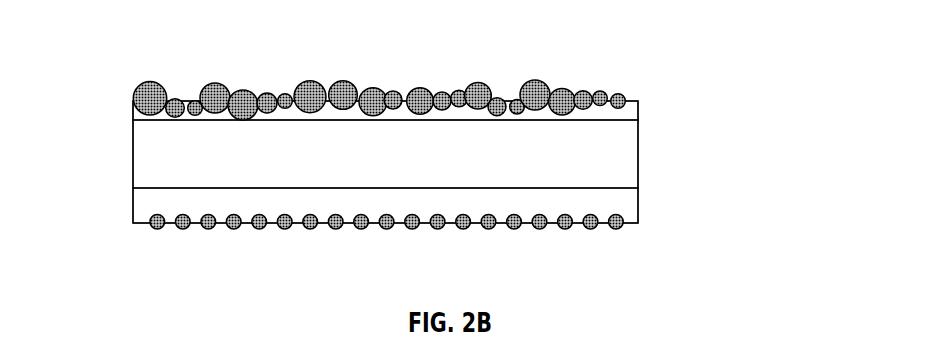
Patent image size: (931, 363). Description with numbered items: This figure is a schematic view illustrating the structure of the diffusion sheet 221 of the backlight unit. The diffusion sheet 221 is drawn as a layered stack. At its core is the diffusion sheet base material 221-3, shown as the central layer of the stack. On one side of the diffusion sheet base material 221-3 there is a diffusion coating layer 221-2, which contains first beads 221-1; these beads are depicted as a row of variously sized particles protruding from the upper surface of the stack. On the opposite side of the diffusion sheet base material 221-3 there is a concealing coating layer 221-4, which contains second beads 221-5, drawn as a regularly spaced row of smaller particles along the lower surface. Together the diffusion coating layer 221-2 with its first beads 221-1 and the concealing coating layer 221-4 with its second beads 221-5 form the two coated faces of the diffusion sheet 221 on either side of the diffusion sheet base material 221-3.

The diffusion sheet 221 is at (122, 95).
The first beads 221-1 is at (613, 96).
The diffusion coating layer 221-2 is at (638, 110).
The diffusion sheet base material 221-3 is at (638, 165).
The concealing coating layer 221-4 is at (638, 207).
The second beads 221-5 is at (620, 229).